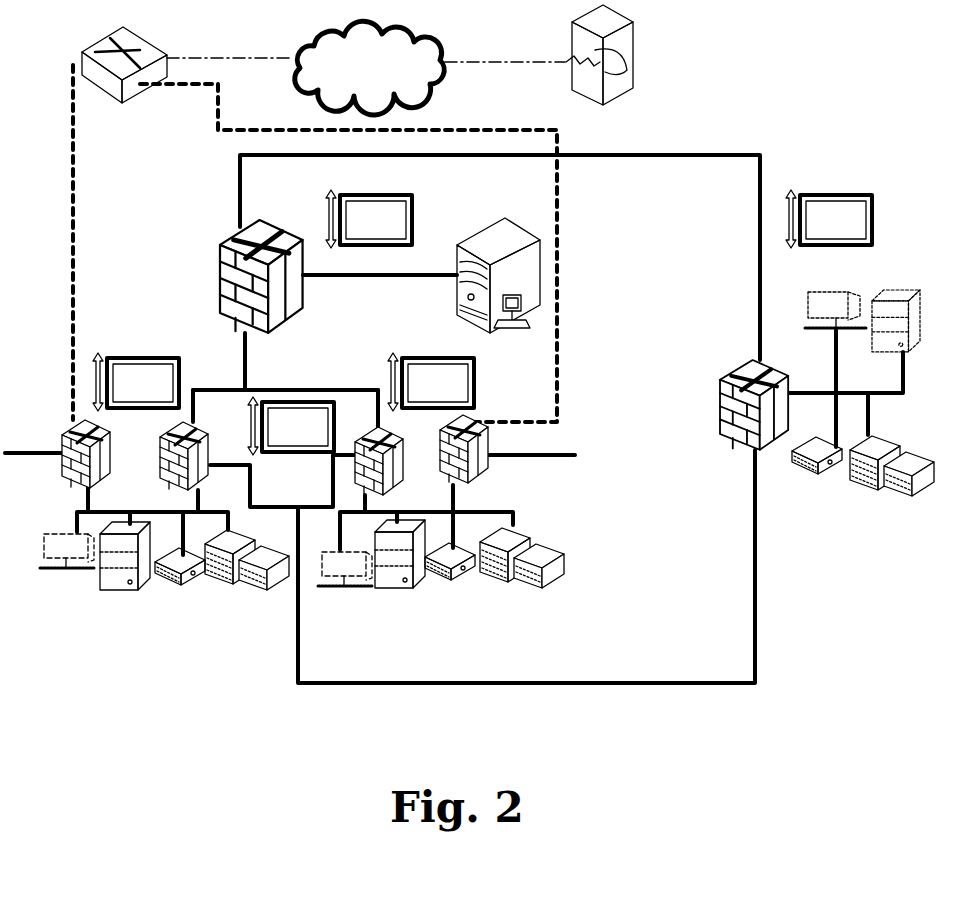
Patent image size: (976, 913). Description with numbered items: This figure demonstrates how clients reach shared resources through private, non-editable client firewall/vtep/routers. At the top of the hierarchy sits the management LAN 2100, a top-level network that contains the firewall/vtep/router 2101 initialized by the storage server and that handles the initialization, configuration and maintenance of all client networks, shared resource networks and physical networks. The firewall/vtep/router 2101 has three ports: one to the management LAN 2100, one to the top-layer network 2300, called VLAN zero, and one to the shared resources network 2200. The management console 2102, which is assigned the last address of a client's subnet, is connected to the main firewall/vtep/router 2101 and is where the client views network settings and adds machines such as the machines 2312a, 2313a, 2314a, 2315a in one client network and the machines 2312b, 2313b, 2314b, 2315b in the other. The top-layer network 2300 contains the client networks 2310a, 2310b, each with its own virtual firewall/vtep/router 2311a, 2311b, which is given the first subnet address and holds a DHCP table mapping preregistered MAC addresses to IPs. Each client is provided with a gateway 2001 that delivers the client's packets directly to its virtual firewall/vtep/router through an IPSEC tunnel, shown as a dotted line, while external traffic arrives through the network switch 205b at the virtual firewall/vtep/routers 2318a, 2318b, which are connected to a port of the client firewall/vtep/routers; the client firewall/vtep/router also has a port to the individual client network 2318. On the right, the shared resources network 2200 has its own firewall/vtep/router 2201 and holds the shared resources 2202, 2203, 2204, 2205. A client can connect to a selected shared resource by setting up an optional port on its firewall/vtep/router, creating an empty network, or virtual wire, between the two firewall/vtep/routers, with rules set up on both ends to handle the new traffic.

The network switch 205b is at (124, 77).
The gateway 2001 is at (319, 236).
The management LAN 2100 is at (369, 211).
The firewall/vtep/router 2101 is at (282, 276).
The management console 2102 is at (421, 272).
The shared resources network 2200 is at (829, 211).
The firewall/vtep/router 2201 is at (745, 406).
The shared resource 2202 is at (835, 298).
The shared resource 2203 is at (896, 310).
The shared resource 2204 is at (818, 478).
The shared resource 2205 is at (892, 477).
The top-layer network 2300 is at (285, 381).
The client network 2310a is at (136, 371).
The client network 2310b is at (431, 370).
The virtual firewall/vtep/router 2311a is at (68, 458).
The virtual firewall/vtep/router 2311b is at (483, 454).
The machine 2312a is at (67, 574).
The machine 2312b is at (341, 583).
The machine 2313a is at (125, 568).
The machine 2313b is at (400, 567).
The machine 2314a is at (181, 580).
The machine 2314b is at (453, 579).
The machine 2315a is at (247, 572).
The machine 2315b is at (522, 571).
The virtual firewall/vtep/router 2318 is at (291, 444).
The virtual firewall/vtep/router 2318a is at (169, 461).
The virtual firewall/vtep/router 2318b is at (398, 462).